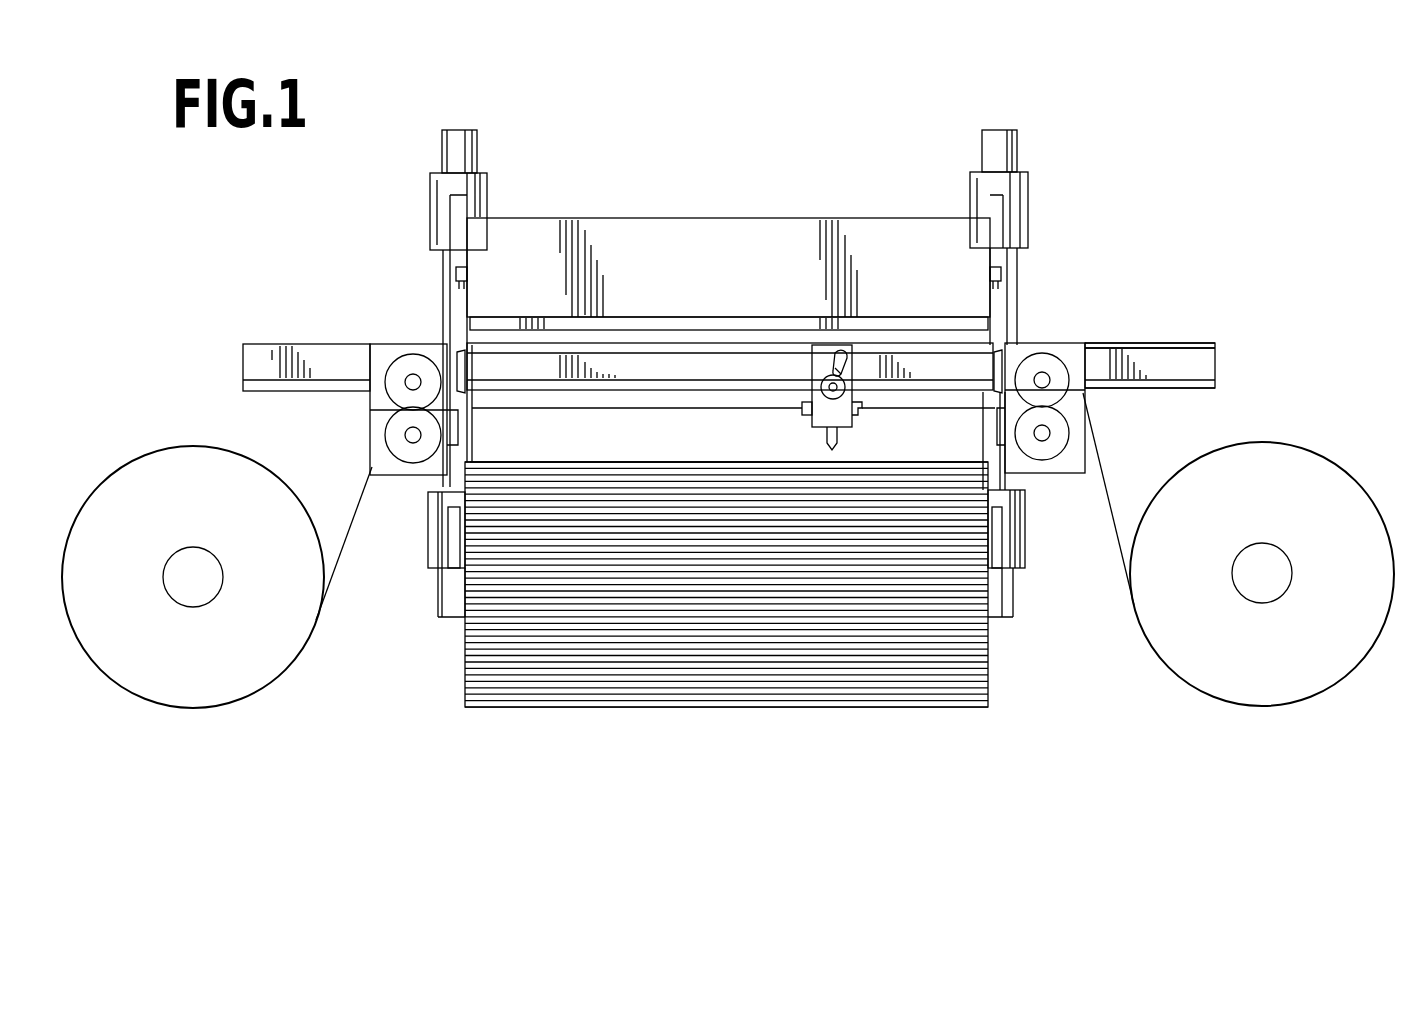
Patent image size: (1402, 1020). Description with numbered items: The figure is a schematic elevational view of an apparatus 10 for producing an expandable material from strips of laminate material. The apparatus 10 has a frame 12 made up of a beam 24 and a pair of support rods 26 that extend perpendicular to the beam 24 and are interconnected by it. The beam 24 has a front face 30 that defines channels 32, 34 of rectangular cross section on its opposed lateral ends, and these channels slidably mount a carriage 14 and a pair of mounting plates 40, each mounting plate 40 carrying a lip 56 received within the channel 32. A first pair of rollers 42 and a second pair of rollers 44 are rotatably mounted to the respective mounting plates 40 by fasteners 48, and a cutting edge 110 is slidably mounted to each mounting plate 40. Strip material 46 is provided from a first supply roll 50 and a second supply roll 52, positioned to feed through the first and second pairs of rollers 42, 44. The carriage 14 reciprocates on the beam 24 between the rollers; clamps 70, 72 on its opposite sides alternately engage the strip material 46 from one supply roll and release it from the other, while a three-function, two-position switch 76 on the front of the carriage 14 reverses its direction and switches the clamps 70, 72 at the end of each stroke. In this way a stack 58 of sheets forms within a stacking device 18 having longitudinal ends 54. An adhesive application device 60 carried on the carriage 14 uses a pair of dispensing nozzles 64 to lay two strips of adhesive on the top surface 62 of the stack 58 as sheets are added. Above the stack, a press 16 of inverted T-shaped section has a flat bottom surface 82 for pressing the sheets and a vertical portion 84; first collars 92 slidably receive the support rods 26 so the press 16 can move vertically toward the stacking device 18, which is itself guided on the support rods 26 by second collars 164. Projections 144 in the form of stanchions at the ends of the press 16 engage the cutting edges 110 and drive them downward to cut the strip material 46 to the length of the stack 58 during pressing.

The apparatus 10 is at (1223, 153).
The frame 12 is at (1150, 343).
The carriage 14 is at (850, 345).
The press 16 is at (630, 245).
The stacking device 18 is at (988, 628).
The beam 24 is at (290, 344).
The support rods 26 is at (477, 150).
The front face 30 is at (1218, 358).
The channel 32 is at (1215, 343).
The channel 34 is at (1215, 393).
The mounting plates 40 is at (378, 344).
The first pair of rollers 42 is at (390, 434).
The second pair of rollers 44 is at (1068, 396).
The strip material 46 is at (332, 590).
The fasteners 48 is at (414, 380).
The first supply roll 50 is at (237, 703).
The second supply roll 52 is at (1318, 703).
The longitudinal ends 54 is at (440, 580).
The lip 56 is at (388, 344).
The stack 58 is at (520, 527).
The adhesive application device 60 is at (823, 345).
The top surface 62 is at (572, 452).
The dispensing nozzles 64 is at (837, 440).
The clamp 70 is at (802, 410).
The clamp 72 is at (862, 403).
The switch 76 is at (840, 363).
The flat bottom surface 82 is at (686, 320).
The vertical portion 84 is at (968, 268).
The first collars 92 is at (430, 190).
The cutting edge 110 is at (468, 372).
The projections 144 is at (457, 275).
The second collars 164 is at (442, 545).